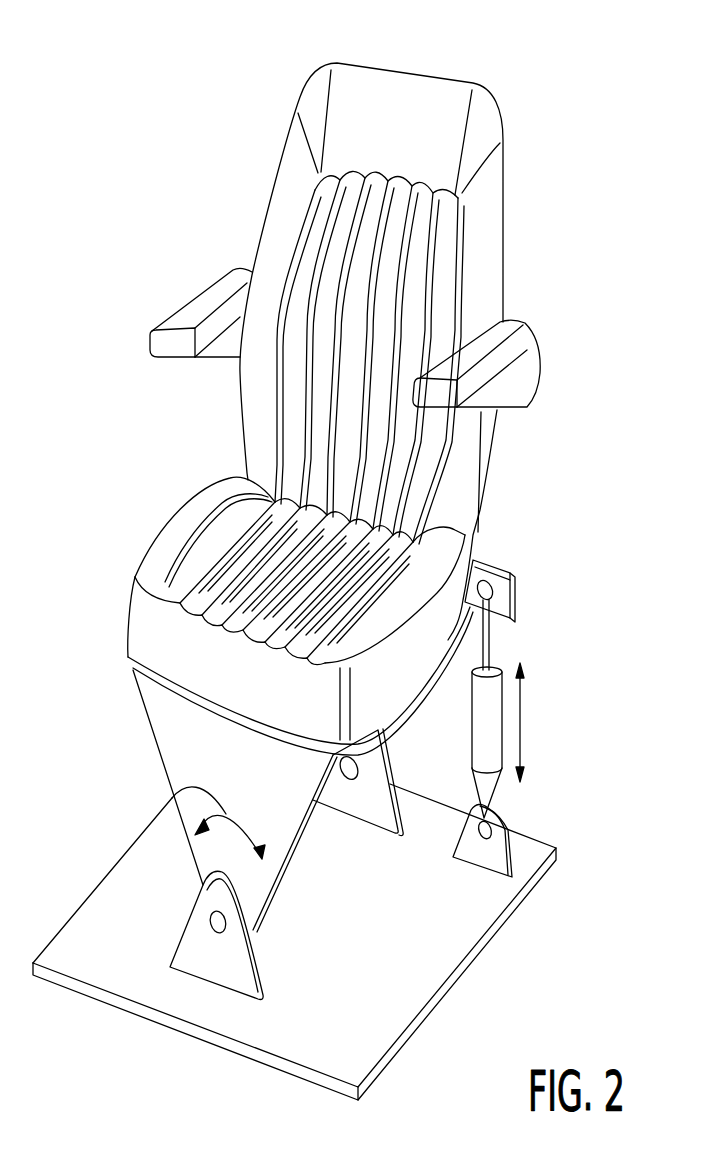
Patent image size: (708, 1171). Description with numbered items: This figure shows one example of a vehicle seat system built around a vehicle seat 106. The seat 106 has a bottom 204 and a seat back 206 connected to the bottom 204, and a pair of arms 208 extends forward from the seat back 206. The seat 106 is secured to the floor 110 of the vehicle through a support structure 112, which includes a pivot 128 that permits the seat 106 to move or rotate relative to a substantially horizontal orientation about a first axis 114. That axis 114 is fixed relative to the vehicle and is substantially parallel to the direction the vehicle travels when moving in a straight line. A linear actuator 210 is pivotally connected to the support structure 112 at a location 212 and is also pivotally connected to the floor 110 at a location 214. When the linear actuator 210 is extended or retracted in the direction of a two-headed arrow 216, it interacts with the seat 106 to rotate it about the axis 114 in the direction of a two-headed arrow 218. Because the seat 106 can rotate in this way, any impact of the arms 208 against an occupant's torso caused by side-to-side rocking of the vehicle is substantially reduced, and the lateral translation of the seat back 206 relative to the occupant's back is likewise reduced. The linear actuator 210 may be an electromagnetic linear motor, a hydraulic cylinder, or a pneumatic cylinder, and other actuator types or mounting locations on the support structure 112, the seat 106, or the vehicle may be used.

The seat 106 is at (240, 432).
The seat back 206 is at (397, 120).
The arms 208 is at (203, 288).
The bottom 204 is at (130, 615).
The support structure 112 is at (160, 722).
The pivot 128 is at (200, 957).
The first axis 114 is at (210, 925).
The two-headed arrow 218 is at (172, 798).
The floor 110 is at (413, 967).
The linear actuator 210 is at (500, 655).
The location 212 is at (490, 562).
The location 214 is at (493, 815).
The two-headed arrow 216 is at (522, 700).